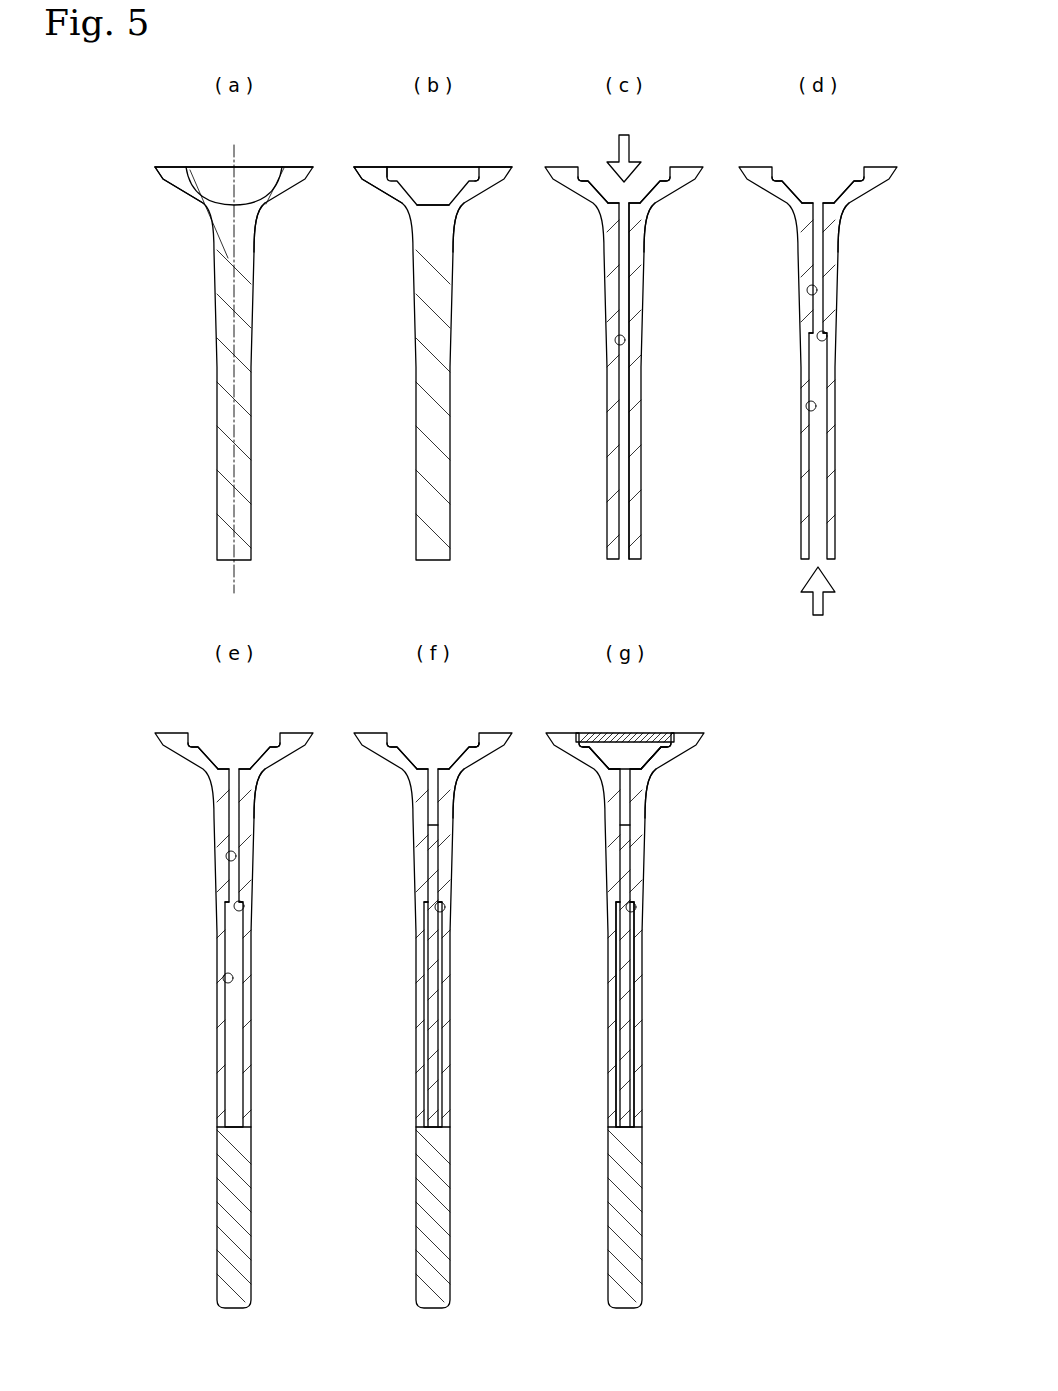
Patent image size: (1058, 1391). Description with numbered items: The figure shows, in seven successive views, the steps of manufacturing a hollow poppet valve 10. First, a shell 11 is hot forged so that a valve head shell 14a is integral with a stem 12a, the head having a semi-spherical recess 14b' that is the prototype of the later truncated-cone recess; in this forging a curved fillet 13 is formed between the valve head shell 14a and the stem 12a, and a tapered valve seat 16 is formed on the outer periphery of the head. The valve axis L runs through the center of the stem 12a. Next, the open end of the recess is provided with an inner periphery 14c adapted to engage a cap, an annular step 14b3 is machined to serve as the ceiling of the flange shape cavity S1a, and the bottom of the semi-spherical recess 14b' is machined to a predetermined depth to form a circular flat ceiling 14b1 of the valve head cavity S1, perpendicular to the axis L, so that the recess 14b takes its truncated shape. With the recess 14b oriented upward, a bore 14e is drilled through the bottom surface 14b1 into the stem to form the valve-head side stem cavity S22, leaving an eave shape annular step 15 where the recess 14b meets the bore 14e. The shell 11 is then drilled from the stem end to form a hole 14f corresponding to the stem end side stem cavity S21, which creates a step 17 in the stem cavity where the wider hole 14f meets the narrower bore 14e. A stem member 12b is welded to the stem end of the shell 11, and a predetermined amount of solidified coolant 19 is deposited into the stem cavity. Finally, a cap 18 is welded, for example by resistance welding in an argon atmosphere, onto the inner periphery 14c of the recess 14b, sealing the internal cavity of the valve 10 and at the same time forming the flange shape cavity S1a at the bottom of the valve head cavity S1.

The hollow poppet valve 10 is at (596, 892).
The shell 11 is at (206, 352).
The stem 12a is at (252, 299).
The stem member 12b is at (252, 1182).
The curved fillet 13 is at (203, 204).
The valve head shell 14a is at (289, 190).
The recess 14b is at (531, 443).
The semi-spherical recess 14b' is at (240, 188).
The circular flat ceiling 14b1 is at (425, 204).
The annular step 14b3 is at (392, 169).
The inner periphery 14c is at (478, 170).
The bore 14e is at (614, 341).
The hole 14f is at (805, 407).
The eave shape annular step 15 is at (632, 207).
The tapered valve seat 16 is at (160, 178).
The step 17 is at (828, 336).
The cap 18 is at (622, 739).
The solidified coolant 19 is at (436, 941).
The axis L is at (235, 576).
The valve head cavity S1 is at (632, 753).
The flange shape cavity S1a is at (663, 752).
The stem end side stem cavity S21 is at (630, 989).
The valve-head side stem cavity S22 is at (618, 805).